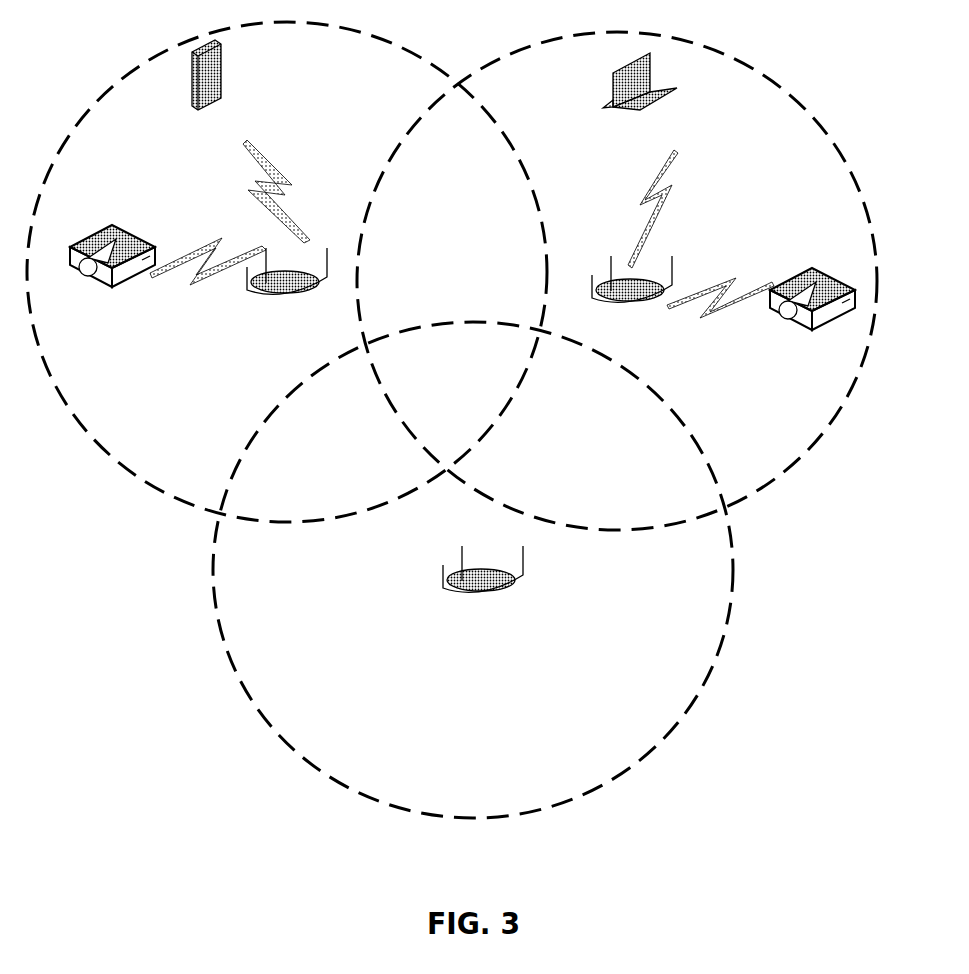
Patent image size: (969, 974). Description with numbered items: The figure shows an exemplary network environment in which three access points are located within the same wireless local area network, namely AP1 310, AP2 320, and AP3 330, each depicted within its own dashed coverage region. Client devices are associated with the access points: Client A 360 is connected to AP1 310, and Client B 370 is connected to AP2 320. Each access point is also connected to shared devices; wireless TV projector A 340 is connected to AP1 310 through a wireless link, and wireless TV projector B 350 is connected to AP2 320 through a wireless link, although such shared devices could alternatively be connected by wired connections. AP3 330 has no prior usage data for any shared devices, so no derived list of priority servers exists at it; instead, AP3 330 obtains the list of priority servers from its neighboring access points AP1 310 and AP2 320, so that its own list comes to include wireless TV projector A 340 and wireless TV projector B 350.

The AP1 310 is at (309, 334).
The AP2 320 is at (654, 336).
The AP3 330 is at (505, 633).
The wireless TV projector A 340 is at (145, 362).
The wireless TV projector B 350 is at (790, 401).
The Client A 360 is at (243, 143).
The Client B 370 is at (684, 143).